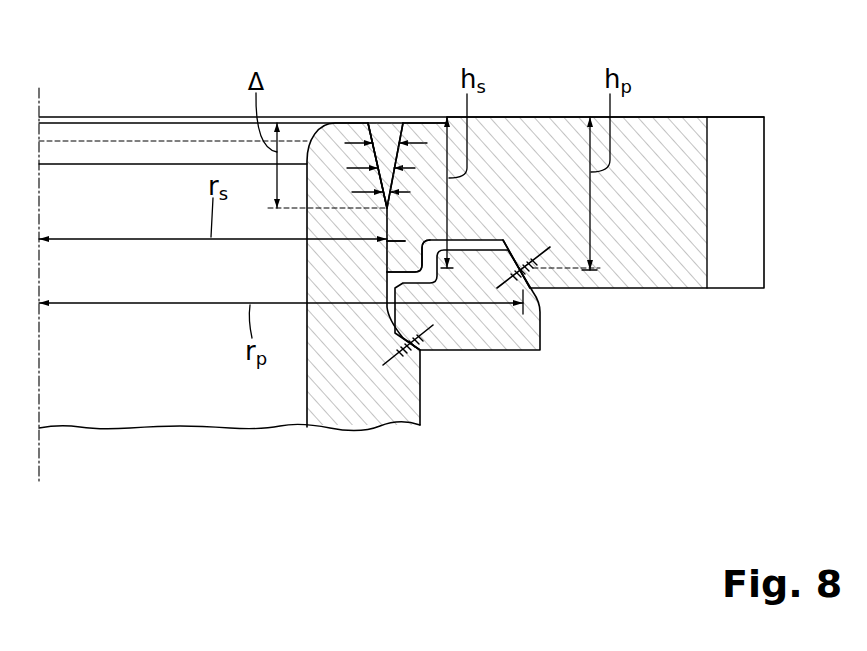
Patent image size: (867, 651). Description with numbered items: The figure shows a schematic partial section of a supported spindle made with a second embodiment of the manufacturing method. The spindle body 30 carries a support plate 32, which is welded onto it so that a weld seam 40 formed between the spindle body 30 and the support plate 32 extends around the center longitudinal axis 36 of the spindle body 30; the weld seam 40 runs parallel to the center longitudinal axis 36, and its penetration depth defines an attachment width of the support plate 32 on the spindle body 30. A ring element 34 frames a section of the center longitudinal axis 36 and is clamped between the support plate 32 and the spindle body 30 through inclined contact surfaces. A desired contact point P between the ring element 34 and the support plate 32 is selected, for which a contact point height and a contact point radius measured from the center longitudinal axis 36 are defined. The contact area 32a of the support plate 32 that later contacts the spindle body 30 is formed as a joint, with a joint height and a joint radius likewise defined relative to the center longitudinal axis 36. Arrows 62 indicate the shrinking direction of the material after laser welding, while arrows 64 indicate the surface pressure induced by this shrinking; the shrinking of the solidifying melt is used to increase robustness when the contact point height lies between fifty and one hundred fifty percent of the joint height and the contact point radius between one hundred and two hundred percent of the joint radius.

The spindle body 30 is at (343, 407).
The support plate 32 is at (688, 197).
The contact area 32a is at (383, 244).
The ring element 34 is at (487, 322).
The center longitudinal axis 36 is at (41, 471).
The weld seam 40 is at (388, 130).
The arrows 62 is at (414, 192).
The arrows 64 is at (405, 347).
The contact point P is at (537, 249).